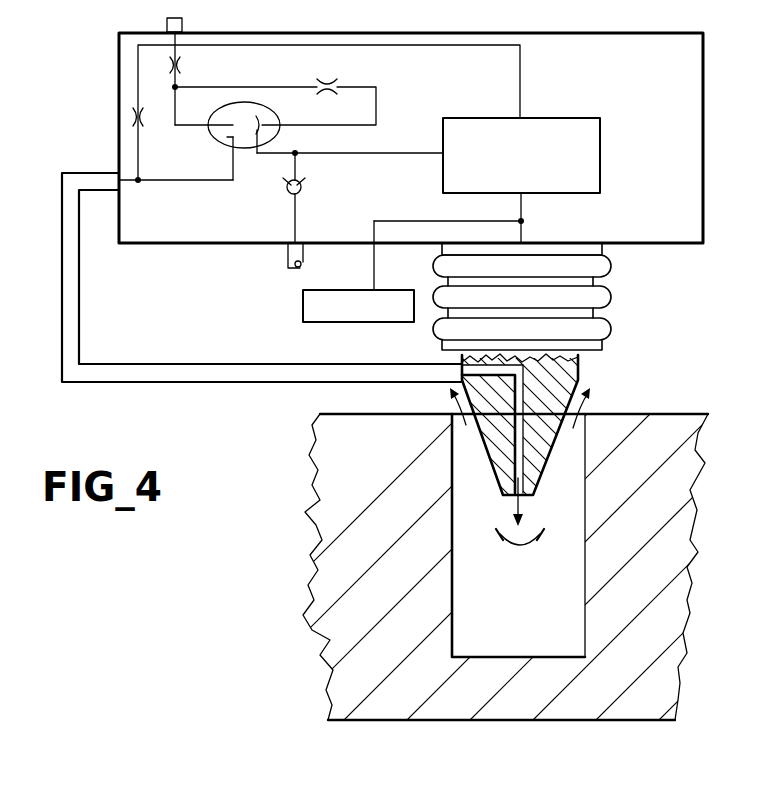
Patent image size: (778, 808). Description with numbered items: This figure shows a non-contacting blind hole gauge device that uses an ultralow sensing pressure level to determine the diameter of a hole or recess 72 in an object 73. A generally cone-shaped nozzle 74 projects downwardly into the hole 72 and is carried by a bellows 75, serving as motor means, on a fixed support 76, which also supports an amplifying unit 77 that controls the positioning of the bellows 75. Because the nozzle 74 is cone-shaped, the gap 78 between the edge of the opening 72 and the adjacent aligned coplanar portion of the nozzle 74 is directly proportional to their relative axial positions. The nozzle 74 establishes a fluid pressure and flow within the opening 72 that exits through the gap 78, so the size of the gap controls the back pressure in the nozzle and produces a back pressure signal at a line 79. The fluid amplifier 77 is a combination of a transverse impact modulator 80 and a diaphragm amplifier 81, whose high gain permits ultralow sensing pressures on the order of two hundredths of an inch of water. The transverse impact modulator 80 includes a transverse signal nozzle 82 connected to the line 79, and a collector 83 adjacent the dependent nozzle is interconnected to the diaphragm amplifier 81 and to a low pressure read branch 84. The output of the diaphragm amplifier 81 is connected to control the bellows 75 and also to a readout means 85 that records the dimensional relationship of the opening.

The hole or recess 72 is at (581, 562).
The object 73 is at (340, 642).
The nozzle 74 is at (553, 390).
The bellows 75 is at (600, 298).
The fixed support 76 is at (553, 248).
The amplifying unit 77 is at (230, 247).
The gap 78 is at (568, 421).
The line 79 is at (180, 372).
The transverse impact modulator 80 is at (242, 160).
The diaphragm amplifier 81 is at (492, 116).
The transverse signal nozzle 82 is at (223, 138).
The collector 83 is at (273, 118).
The low pressure read branch 84 is at (298, 214).
The readout means 85 is at (330, 322).